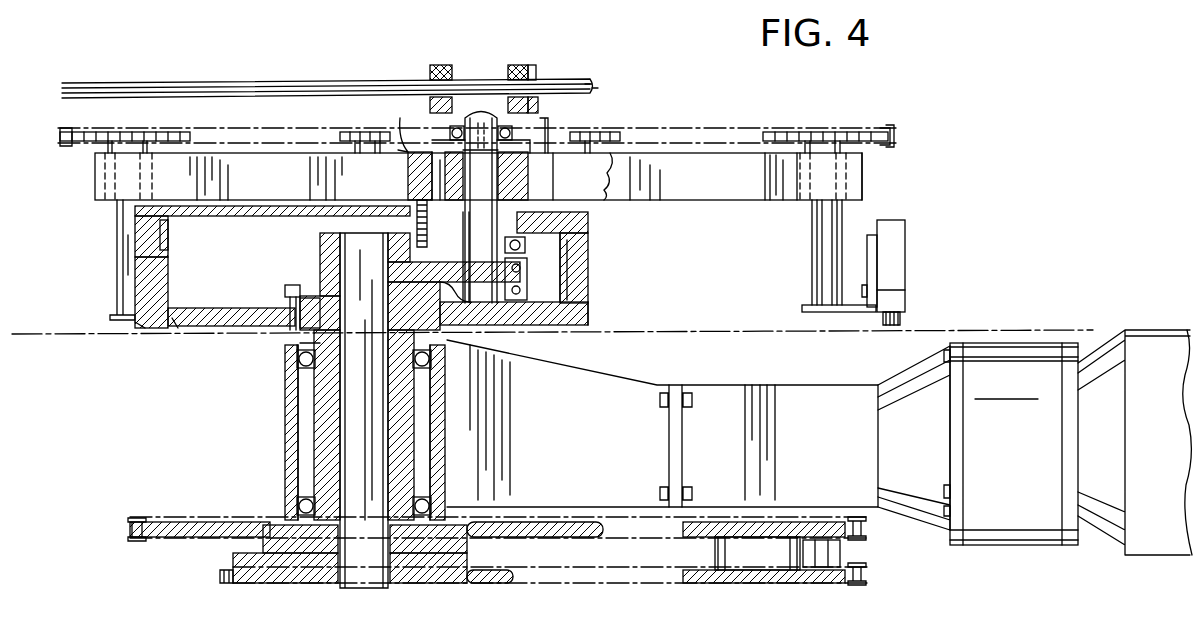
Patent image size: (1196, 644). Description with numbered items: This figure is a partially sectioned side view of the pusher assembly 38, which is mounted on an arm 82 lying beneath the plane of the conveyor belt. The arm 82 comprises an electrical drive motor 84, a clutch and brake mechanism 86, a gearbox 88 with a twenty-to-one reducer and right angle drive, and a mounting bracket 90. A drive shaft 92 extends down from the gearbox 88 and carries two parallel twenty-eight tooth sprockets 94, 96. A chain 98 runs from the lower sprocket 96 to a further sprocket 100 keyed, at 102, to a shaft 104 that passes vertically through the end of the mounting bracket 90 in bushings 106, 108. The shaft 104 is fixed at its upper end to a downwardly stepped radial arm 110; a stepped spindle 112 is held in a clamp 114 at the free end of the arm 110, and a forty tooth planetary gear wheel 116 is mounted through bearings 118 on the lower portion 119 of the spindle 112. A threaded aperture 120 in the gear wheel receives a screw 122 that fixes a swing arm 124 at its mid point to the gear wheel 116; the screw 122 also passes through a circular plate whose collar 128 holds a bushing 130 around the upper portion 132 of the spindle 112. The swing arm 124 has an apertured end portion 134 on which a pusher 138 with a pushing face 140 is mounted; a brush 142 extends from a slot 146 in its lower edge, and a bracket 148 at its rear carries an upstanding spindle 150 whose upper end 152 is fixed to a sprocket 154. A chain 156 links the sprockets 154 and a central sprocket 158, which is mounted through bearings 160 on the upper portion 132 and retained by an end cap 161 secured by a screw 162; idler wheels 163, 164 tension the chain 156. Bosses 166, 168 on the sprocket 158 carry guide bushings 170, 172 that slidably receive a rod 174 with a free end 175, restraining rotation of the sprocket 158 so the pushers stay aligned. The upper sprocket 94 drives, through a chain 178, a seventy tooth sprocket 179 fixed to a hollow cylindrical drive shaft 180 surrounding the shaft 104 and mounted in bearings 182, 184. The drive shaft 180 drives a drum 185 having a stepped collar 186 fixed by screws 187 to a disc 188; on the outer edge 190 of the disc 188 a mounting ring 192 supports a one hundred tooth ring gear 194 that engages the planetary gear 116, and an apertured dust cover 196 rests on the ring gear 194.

The pusher assembly 38 is at (652, 94).
The arm 82 is at (914, 540).
The electrical drive motor 84 is at (1145, 558).
The clutch and brake mechanism 86 is at (1025, 550).
The gearbox 88 is at (880, 508).
The mounting bracket 90 is at (600, 380).
The drive shaft 92 is at (770, 585).
The upper sprocket 94 is at (866, 545).
The lower sprocket 96 is at (810, 585).
The chain 98 is at (665, 585).
The sprocket 100 is at (455, 585).
The key 102 is at (330, 585).
The shaft 104 is at (388, 585).
The bushing 106 is at (330, 240).
The bushing 108 is at (300, 345).
The radial arm 110 is at (470, 330).
The stepped spindle 112 is at (548, 235).
The clamp 114 is at (530, 283).
The planetary gear wheel 116 is at (590, 215).
The bearings 118 is at (588, 263).
The lower portion 119 is at (590, 308).
The threaded aperture 120 is at (398, 150).
The screw 122 is at (418, 148).
The swing arm 124 is at (703, 195).
The collar 128 is at (432, 97).
The bushing 130 is at (548, 120).
The upper portion 132 is at (512, 97).
The apertured end portion 134 is at (864, 177).
The pusher 138 is at (905, 225).
The pushing face 140 is at (907, 275).
The brush 142 is at (903, 322).
The slot 146 is at (902, 315).
The bracket 148 is at (805, 308).
The spindle 150 is at (845, 212).
The upper end 152 is at (805, 128).
The sprocket 154 is at (860, 130).
The chain 156 is at (892, 128).
The central sprocket 158 is at (592, 86).
The bearings 160 is at (480, 115).
The end cap 161 is at (466, 125).
The screw 162 is at (500, 65).
The idler wheel 163 is at (613, 133).
The idler wheel 164 is at (347, 135).
The boss 166 is at (530, 64).
The boss 168 is at (440, 65).
The guide bushing 170 is at (538, 74).
The guide bushing 172 is at (456, 125).
The rod 174 is at (217, 96).
The free end 175 is at (598, 88).
The chain 178 is at (130, 535).
The sprocket 179 is at (175, 537).
The hollow cylindrical drive shaft 180 is at (305, 470).
The bearing 182 is at (296, 505).
The bearing 184 is at (290, 365).
The drum 185 is at (178, 330).
The stepped collar 186 is at (290, 300).
The screws 187 is at (300, 325).
The disc 188 is at (197, 308).
The outer edge 190 is at (140, 325).
The mounting ring 192 is at (168, 273).
The ring gear 194 is at (168, 233).
The dust cover 196 is at (300, 216).